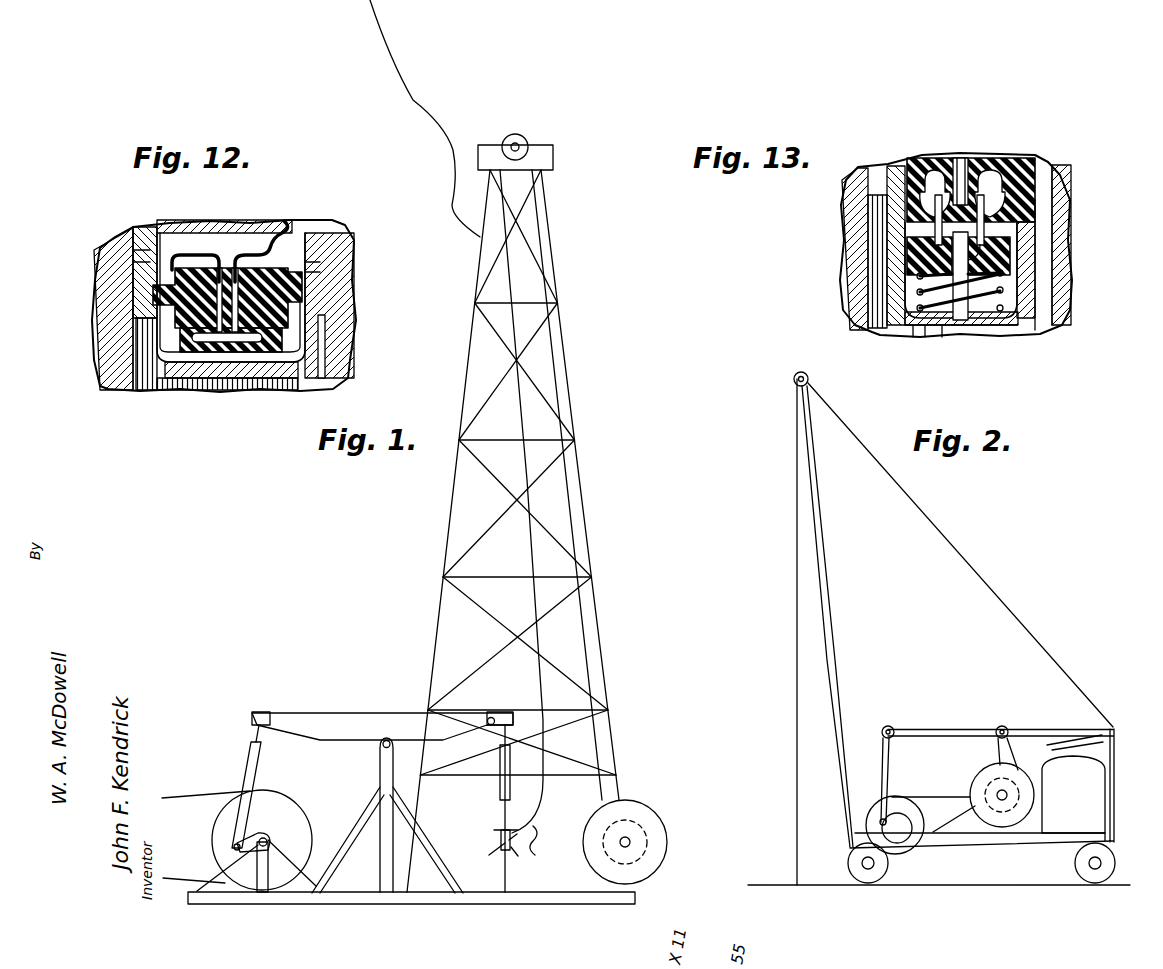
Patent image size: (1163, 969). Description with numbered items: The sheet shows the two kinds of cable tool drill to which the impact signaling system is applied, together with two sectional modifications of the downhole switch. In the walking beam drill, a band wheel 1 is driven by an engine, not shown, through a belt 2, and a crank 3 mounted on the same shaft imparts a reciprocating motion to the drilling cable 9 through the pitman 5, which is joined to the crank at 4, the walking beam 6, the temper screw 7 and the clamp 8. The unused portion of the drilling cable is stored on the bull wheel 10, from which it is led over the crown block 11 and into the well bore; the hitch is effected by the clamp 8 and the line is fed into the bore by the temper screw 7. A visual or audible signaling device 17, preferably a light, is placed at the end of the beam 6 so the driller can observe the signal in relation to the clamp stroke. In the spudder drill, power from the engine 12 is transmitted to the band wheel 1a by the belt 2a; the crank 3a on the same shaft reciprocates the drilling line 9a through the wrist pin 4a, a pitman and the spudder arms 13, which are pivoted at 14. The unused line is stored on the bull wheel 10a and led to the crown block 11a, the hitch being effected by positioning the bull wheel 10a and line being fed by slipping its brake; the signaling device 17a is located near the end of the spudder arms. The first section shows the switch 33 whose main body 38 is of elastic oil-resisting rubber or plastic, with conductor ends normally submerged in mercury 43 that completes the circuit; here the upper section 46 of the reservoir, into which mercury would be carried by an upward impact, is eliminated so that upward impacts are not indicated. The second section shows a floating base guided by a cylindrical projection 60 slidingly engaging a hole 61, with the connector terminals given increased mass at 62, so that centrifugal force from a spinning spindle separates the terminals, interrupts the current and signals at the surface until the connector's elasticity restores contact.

In FIG. 1, the band wheel 1 is at (303, 823).
In FIG. 1, the belt 2 is at (191, 796).
In FIG. 1, the crank 3 is at (257, 834).
In FIG. 1, the crank pin 4 is at (232, 847).
In FIG. 1, the pitman 5 is at (256, 775).
In FIG. 1, the walking beam 6 is at (325, 713).
In FIG. 1, the temper screw 7 is at (500, 795).
In FIG. 1, the clamp 8 is at (500, 840).
In FIG. 1, the drilling cable 9 is at (514, 862).
In FIG. 1, the bull wheel 10 is at (648, 818).
In FIG. 1, the crown block 11 is at (529, 144).
In FIG. 1, the visual signaling and/or audible alarm device 17 is at (490, 713).
In FIG. 2, the band wheel 1a is at (902, 798).
In FIG. 2, the belt 2a is at (940, 798).
In FIG. 2, the crank 3a is at (897, 836).
In FIG. 2, the wrist pin 4a is at (880, 823).
In FIG. 2, the drilling line 9a is at (877, 700).
In FIG. 2, the bull wheel 10a is at (985, 770).
In FIG. 2, the crown block 11a is at (809, 380).
In FIG. 2, the engine 12 is at (1073, 794).
In FIG. 2, the spudder arms 13 is at (910, 731).
In FIG. 2, the pivot 14 is at (1008, 727).
In FIG. 2, the visual signaling and/or audible alarm device 17a is at (882, 734).
In FIG. 12, the switch 33 is at (300, 360).
In FIG. 13, the switch 33 is at (1017, 320).
In FIG. 12, the main body of the switch 38 is at (152, 291).
In FIG. 12, the mercury 43 is at (217, 343).
In FIG. 12, the upper section of the reservoir 46 is at (297, 285).
In FIG. 13, the cylindrical projection 60 is at (963, 290).
In FIG. 13, the hole 61 is at (918, 263).
In FIG. 13, the increased mass of connector terminals 62 is at (893, 208).